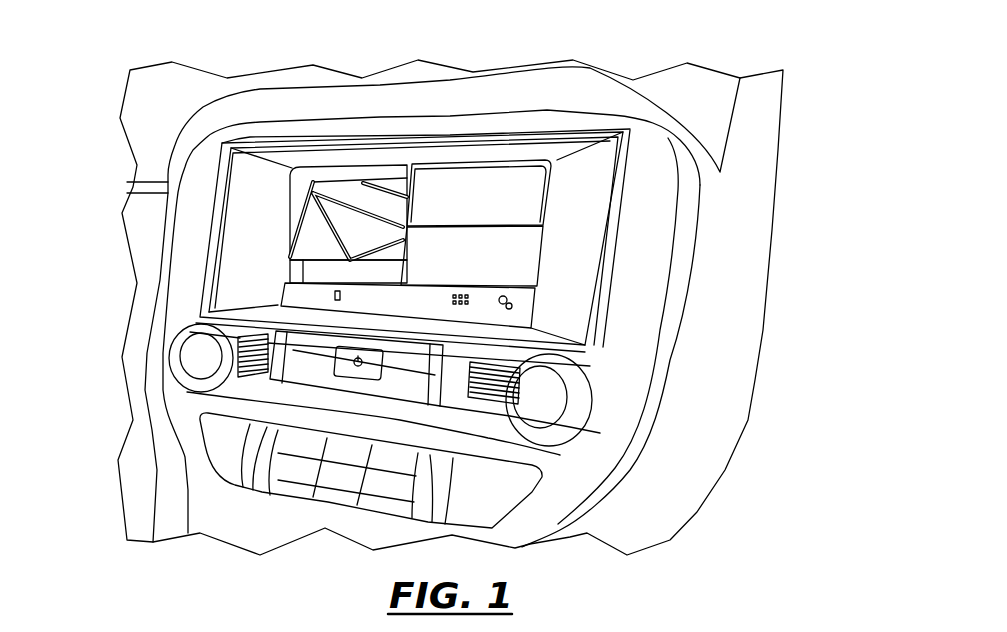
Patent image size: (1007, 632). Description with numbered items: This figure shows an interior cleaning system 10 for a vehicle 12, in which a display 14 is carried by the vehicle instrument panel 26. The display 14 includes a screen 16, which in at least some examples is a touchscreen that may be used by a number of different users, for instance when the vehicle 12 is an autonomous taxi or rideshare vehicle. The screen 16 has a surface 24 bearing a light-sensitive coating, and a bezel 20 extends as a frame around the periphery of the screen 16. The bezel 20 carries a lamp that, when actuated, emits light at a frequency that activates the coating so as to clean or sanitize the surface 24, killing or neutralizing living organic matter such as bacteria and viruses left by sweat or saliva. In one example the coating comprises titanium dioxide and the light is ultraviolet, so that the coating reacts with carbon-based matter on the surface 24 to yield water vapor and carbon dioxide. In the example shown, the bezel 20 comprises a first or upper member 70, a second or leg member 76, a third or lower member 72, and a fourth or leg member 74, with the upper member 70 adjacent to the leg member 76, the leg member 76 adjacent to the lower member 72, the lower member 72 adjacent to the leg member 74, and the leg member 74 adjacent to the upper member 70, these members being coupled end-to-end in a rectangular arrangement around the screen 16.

The interior cleaning system 10 is at (106, 418).
The vehicle 12 is at (118, 128).
The display 14 is at (200, 297).
The screen 16 is at (533, 175).
The bezel 20 is at (233, 225).
The surface 24 is at (525, 208).
The vehicle instrument panel 26 is at (162, 88).
The upper member 70 is at (417, 143).
The lower member 72 is at (545, 347).
The leg member 74 is at (218, 203).
The leg member 76 is at (662, 228).